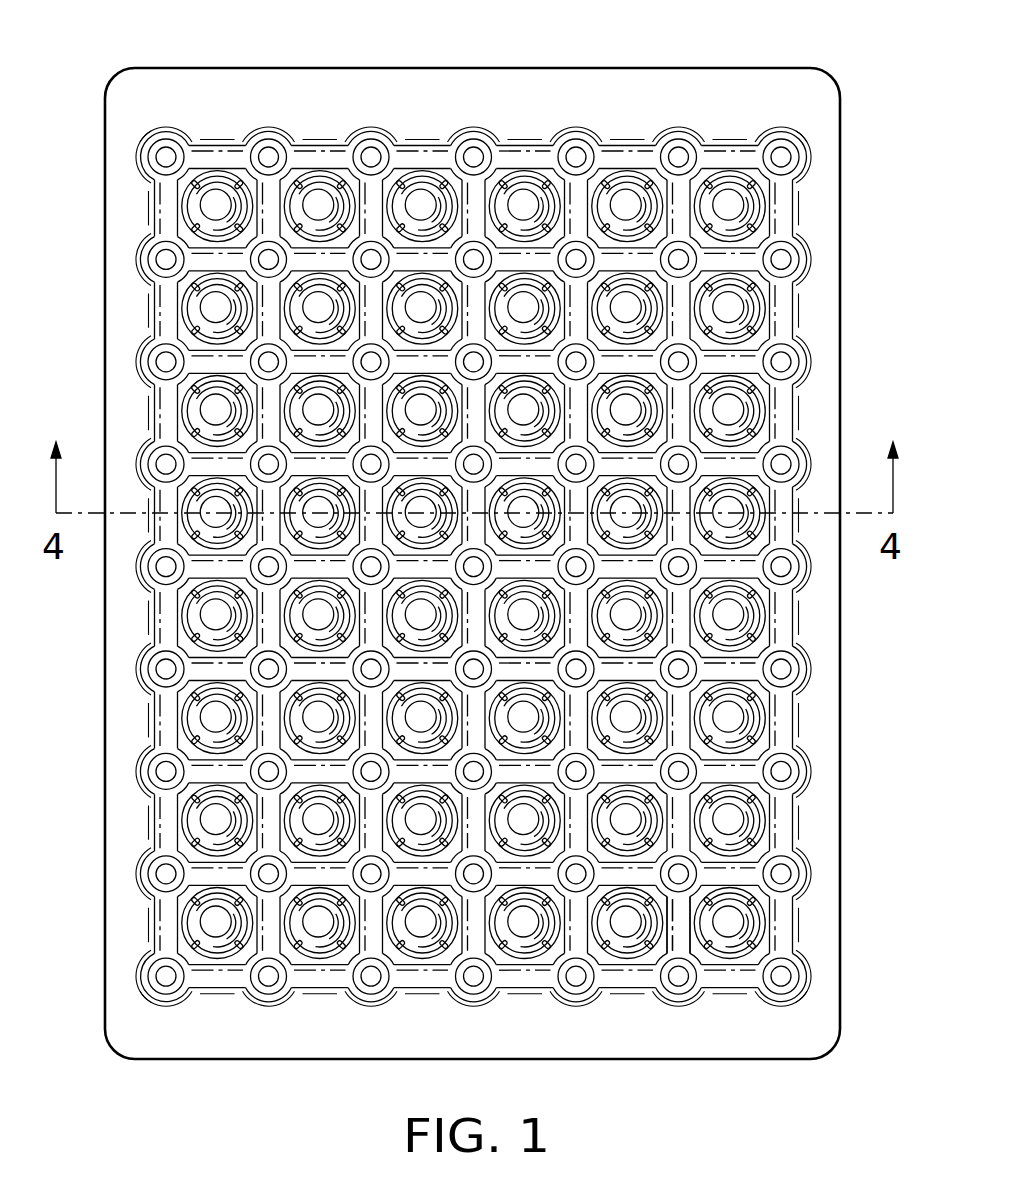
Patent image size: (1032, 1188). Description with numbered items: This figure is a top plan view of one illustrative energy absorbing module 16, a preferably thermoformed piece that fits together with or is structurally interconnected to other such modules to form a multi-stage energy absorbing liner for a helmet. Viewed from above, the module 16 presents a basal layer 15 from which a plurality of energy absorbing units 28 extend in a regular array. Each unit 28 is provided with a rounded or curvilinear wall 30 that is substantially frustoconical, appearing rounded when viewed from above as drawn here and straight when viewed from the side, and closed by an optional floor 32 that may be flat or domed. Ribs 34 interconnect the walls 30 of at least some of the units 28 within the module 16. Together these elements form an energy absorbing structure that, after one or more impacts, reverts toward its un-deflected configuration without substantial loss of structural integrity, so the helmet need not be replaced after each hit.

The basal layer 15 is at (628, 102).
The energy absorbing module 16 is at (784, 259).
The floor 32 is at (784, 362).
The energy absorbing unit 28 is at (803, 580).
The curvilinear wall 30 is at (803, 786).
The rib 34 is at (680, 925).